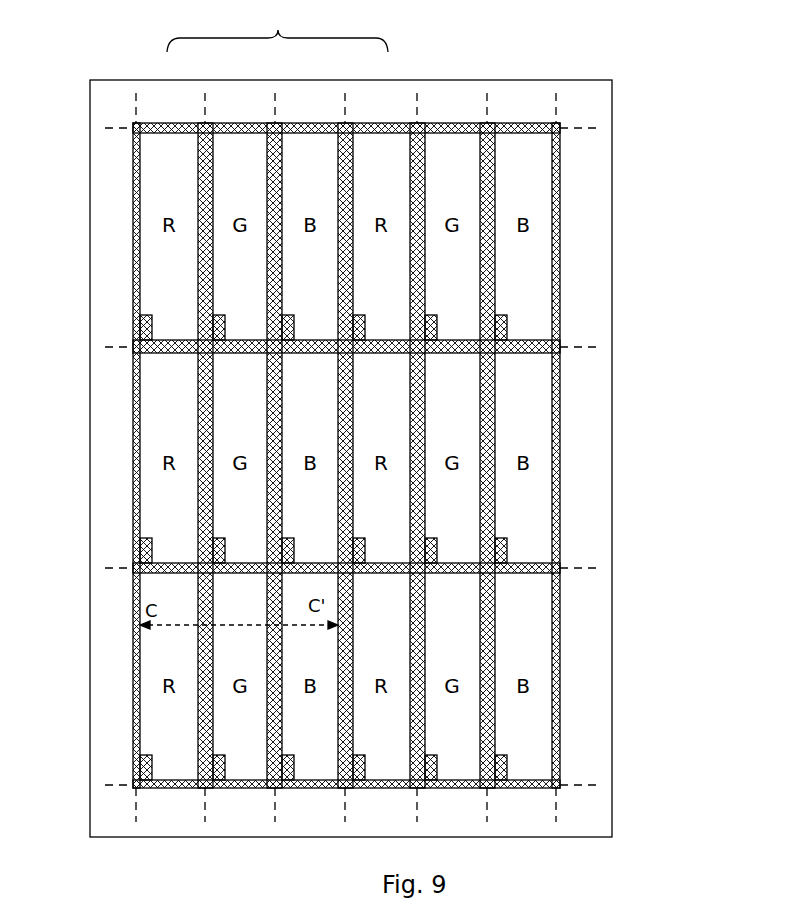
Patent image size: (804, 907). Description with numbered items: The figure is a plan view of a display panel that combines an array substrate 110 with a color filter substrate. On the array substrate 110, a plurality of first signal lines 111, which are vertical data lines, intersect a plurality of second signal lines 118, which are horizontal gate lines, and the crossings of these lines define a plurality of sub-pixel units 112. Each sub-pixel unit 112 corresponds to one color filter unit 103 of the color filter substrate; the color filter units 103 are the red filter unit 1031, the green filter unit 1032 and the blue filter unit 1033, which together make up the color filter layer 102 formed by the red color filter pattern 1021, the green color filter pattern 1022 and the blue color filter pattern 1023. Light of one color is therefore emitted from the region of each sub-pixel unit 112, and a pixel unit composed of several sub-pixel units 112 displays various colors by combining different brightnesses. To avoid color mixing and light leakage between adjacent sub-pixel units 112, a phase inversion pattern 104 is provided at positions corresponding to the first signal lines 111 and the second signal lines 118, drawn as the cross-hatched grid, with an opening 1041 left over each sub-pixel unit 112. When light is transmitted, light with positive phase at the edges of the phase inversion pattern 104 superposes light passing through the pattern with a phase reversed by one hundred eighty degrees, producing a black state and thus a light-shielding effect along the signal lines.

The color filter layer 102 is at (264, 173).
The red color filter pattern 1021 is at (152, 165).
The green color filter pattern 1022 is at (225, 165).
The blue color filter pattern 1023 is at (300, 165).
The color filter unit 103 is at (504, 172).
The red filter unit 1031 is at (382, 163).
The green filter unit 1032 is at (458, 163).
The blue filter unit 1033 is at (527, 163).
The array substrate 110 is at (597, 187).
The second signal line 118 is at (585, 347).
The sub-pixel unit 112 is at (535, 555).
The opening 1041 is at (533, 655).
The phase inversion pattern 104 is at (560, 740).
The first signal line 111 is at (560, 817).